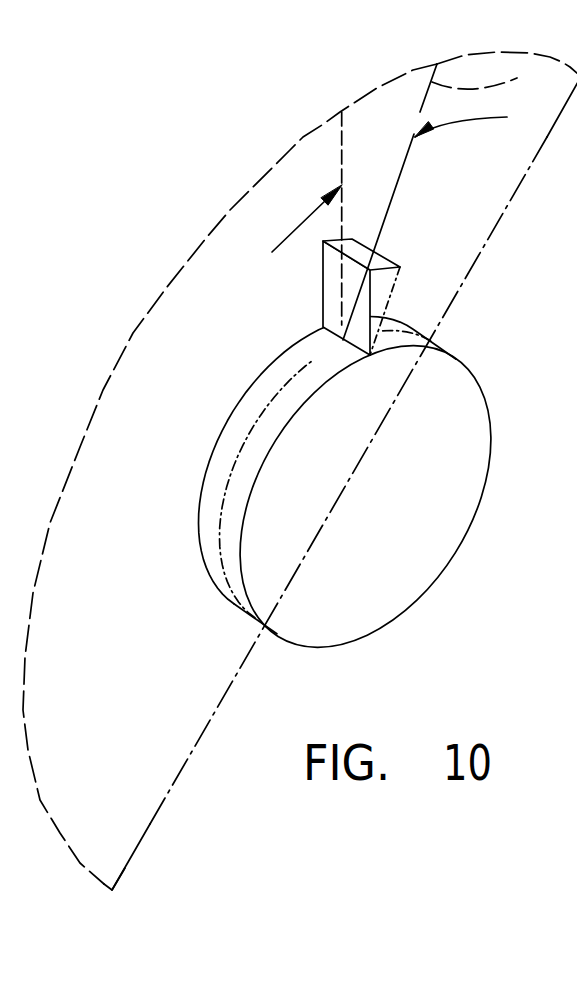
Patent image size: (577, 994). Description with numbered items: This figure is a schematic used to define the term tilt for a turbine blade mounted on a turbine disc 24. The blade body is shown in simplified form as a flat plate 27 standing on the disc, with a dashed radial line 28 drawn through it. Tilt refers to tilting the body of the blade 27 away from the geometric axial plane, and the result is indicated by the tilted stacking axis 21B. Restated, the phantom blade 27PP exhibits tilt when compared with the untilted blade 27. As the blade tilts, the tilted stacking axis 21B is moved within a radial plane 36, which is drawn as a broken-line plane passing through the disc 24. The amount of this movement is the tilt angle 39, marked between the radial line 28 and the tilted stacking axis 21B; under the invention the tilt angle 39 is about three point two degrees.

The tilted stacking axis 21B is at (300, 471).
The turbine disc 24 is at (390, 529).
The flat plate 27 is at (323, 298).
The phantom blade 27PP is at (396, 259).
The radial line 28 is at (342, 173).
The radial plane 36 is at (240, 662).
The tilt angle 39 is at (324, 202).